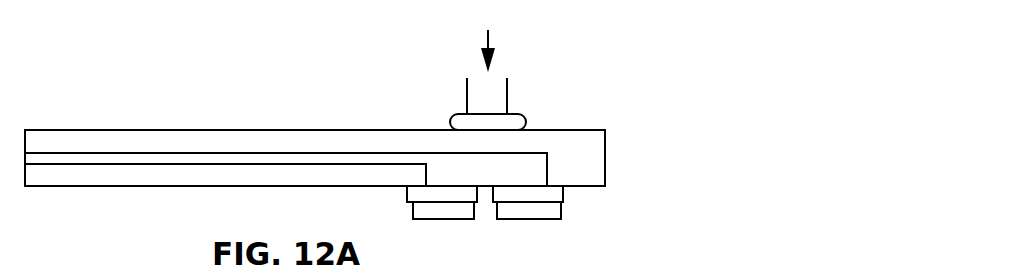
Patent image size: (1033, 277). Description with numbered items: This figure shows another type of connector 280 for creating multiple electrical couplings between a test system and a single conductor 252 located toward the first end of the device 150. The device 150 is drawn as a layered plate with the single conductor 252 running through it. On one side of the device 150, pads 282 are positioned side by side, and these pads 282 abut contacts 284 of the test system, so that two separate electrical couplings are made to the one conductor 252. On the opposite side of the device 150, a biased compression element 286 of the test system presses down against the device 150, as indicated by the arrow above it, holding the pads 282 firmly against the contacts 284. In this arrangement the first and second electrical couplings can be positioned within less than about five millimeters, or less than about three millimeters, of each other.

The device 150 is at (143, 129).
The single conductor 252 is at (240, 153).
The connector 280 is at (626, 82).
The pads 282 is at (404, 192).
The contacts 284 is at (433, 219).
The biased compression element 286 is at (467, 98).